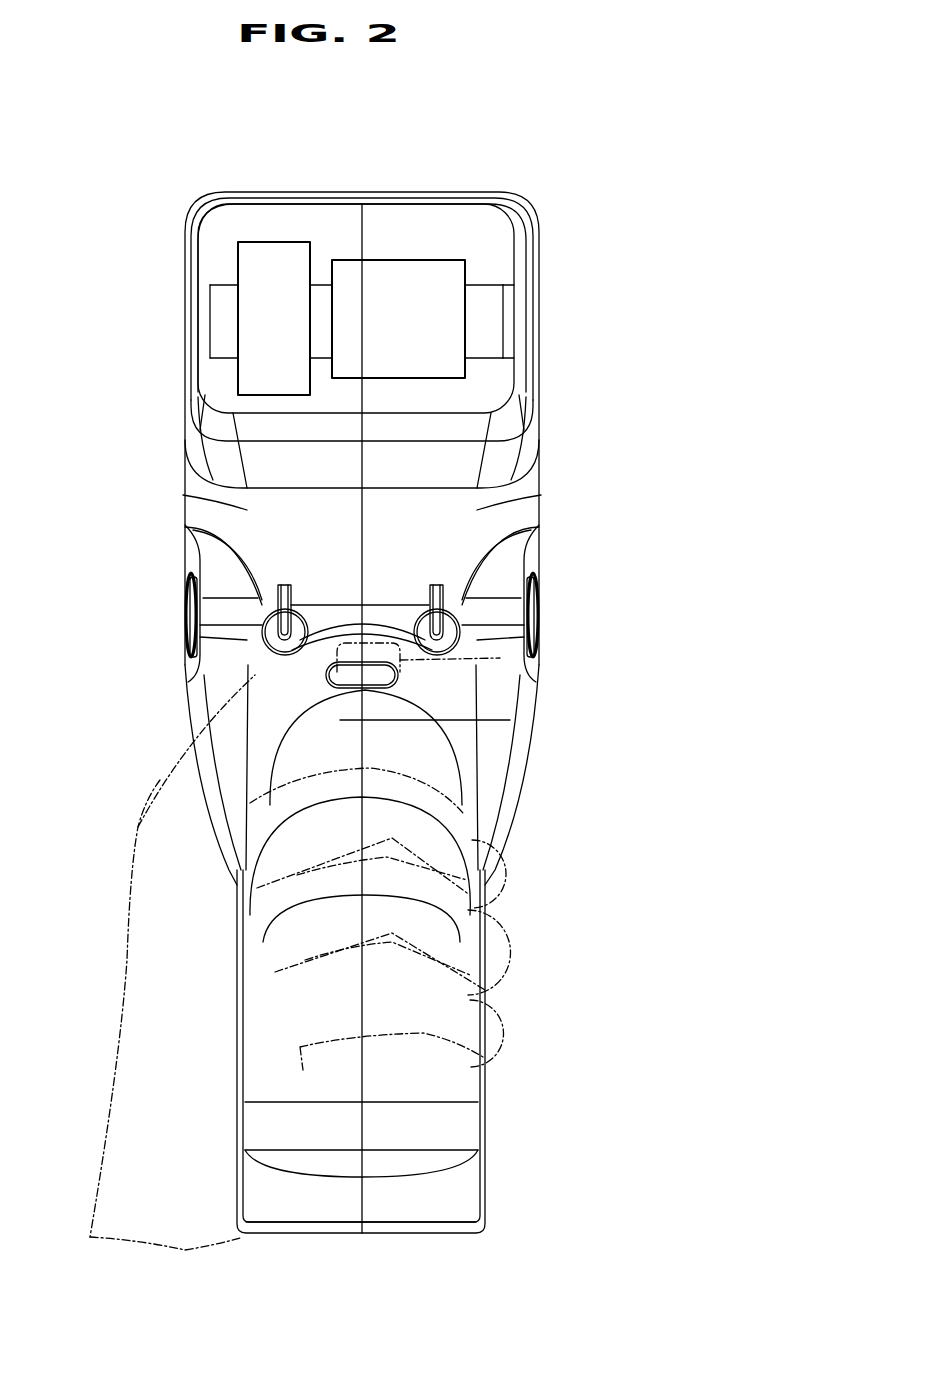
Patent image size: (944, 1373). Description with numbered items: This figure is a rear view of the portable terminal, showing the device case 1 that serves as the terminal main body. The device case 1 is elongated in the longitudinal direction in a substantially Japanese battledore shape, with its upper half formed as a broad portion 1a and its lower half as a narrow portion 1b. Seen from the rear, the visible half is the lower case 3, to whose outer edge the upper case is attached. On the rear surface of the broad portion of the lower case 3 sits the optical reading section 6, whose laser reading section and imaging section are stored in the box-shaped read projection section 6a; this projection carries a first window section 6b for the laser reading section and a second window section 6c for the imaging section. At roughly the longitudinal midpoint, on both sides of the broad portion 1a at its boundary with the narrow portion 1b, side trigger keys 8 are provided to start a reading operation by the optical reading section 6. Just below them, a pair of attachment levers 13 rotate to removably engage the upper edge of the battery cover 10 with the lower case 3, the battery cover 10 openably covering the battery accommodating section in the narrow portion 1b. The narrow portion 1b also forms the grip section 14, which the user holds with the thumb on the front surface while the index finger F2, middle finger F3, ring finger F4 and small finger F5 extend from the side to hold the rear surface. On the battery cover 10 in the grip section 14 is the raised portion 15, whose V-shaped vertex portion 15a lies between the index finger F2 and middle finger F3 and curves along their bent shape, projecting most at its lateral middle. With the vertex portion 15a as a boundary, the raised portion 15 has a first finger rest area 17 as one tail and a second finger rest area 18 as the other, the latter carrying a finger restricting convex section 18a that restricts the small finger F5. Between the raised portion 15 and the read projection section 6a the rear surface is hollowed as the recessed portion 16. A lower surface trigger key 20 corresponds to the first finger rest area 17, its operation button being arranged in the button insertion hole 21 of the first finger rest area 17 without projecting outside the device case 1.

The device case 1 is at (210, 192).
The broad portion 1a is at (542, 420).
The narrow portion 1b is at (238, 968).
The lower case 3 is at (245, 508).
The optical reading section 6 is at (406, 269).
The read projection section 6a is at (505, 318).
The first window section 6b is at (426, 283).
The second window section 6c is at (264, 260).
The side trigger keys 8 is at (186, 612).
The battery cover 10 is at (335, 1128).
The attachment levers 13 is at (275, 628).
The grip section 14 is at (258, 1025).
The raised portion 15 is at (342, 730).
The vertex portion 15a is at (395, 716).
The recessed portion 16 is at (345, 568).
The first finger rest area 17 is at (276, 701).
The second finger rest area 18 is at (403, 823).
The finger restricting convex section 18a is at (424, 1203).
The lower surface trigger key 20 is at (395, 684).
The button insertion hole 21 is at (355, 650).
The index finger F2 is at (500, 658).
The middle finger F3 is at (506, 878).
The ring finger F4 is at (508, 968).
The small finger F5 is at (503, 1053).